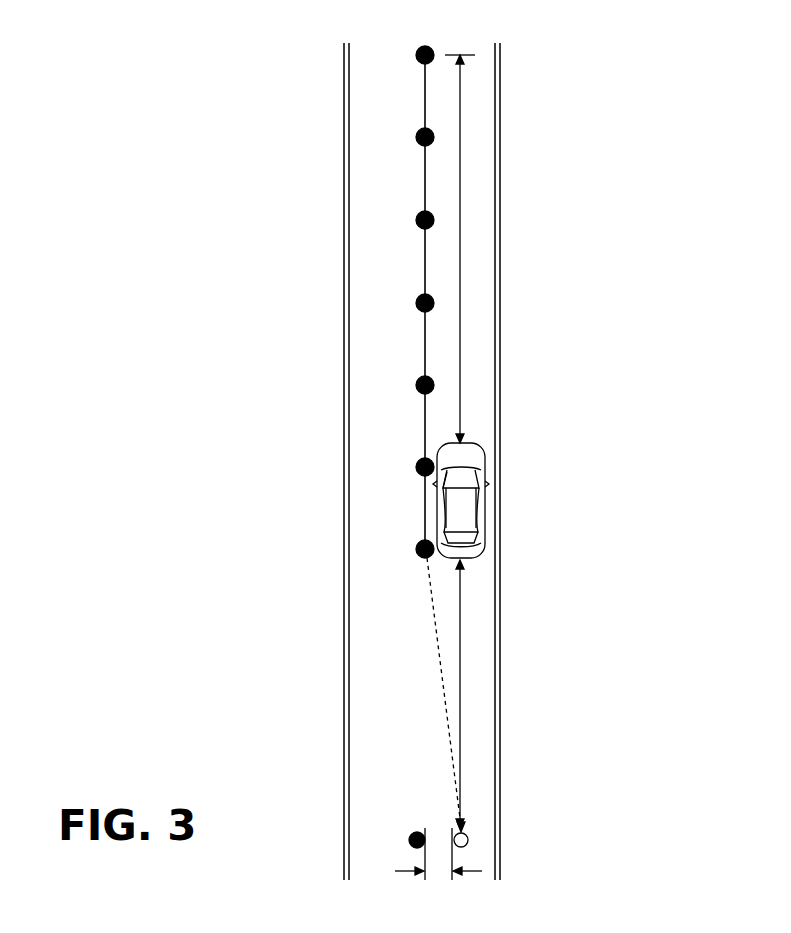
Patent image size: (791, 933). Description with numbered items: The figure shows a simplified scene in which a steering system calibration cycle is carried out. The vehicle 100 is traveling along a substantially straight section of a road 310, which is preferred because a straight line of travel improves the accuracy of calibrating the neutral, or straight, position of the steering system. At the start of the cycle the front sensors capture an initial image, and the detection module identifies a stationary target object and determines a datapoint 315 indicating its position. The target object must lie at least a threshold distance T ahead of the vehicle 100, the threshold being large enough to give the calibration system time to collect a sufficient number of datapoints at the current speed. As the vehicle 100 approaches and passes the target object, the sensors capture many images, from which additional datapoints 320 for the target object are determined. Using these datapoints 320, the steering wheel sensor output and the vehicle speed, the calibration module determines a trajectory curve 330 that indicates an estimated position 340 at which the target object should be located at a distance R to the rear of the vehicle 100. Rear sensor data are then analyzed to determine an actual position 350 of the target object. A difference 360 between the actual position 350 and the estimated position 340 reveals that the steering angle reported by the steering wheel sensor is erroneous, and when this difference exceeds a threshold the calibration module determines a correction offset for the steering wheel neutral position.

The vehicle 100 is at (485, 498).
The road 310 is at (500, 256).
The datapoint 315 is at (426, 46).
The additional datapoints 320 is at (417, 549).
The trajectory curve 330 is at (428, 589).
The estimated position 340 is at (468, 840).
The actual position 350 is at (415, 835).
The difference 360 is at (438, 873).
The threshold distance T is at (460, 190).
The distance R is at (460, 651).